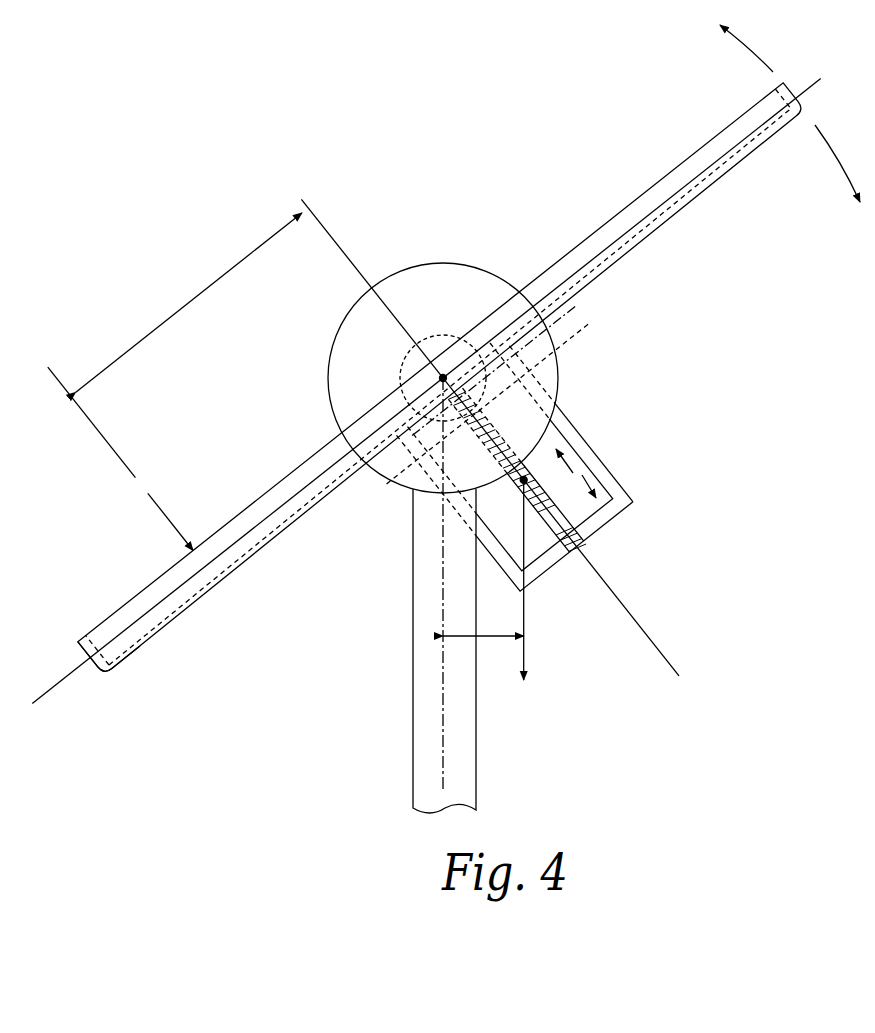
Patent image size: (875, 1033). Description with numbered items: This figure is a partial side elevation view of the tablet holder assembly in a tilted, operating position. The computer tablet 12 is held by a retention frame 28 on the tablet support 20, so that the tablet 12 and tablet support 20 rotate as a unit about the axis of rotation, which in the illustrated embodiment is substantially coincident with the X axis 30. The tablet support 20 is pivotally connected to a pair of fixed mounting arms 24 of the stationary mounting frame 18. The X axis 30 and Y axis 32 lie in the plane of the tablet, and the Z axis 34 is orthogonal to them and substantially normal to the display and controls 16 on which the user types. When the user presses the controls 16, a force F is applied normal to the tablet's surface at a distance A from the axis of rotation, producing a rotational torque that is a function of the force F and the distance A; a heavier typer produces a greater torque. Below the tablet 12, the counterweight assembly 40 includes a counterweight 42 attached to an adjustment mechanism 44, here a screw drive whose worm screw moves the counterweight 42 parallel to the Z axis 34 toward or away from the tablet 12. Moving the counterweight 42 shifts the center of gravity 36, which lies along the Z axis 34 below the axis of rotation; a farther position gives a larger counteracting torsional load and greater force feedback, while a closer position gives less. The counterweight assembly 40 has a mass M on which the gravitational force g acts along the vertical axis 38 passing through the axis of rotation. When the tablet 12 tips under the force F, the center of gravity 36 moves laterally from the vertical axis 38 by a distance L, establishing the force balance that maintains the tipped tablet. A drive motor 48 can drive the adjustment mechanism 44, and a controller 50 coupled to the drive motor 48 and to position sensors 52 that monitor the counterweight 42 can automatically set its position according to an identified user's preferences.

The computer tablet 12 is at (665, 172).
The controls 16 is at (133, 594).
The mounting frame 18 is at (476, 770).
The tablet support 20 is at (455, 350).
The mounting arms 24 is at (430, 275).
The retention frame 28 is at (130, 655).
The X axis 30 is at (440, 382).
The Y axis 32 is at (53, 668).
The Z axis 34 is at (327, 232).
The center of gravity 36 is at (547, 455).
The vertical axis 38 is at (441, 735).
The counterweight assembly 40 is at (633, 495).
The counterweight 42 is at (590, 478).
The adjustment mechanism 44 is at (575, 545).
The drive motor 48 is at (545, 330).
The controller 50 is at (428, 351).
The position sensors 52 is at (558, 355).
The distance A is at (180, 305).
The force F is at (148, 498).
The mass M is at (585, 445).
The gravitational force g is at (525, 660).
The distance L is at (490, 640).